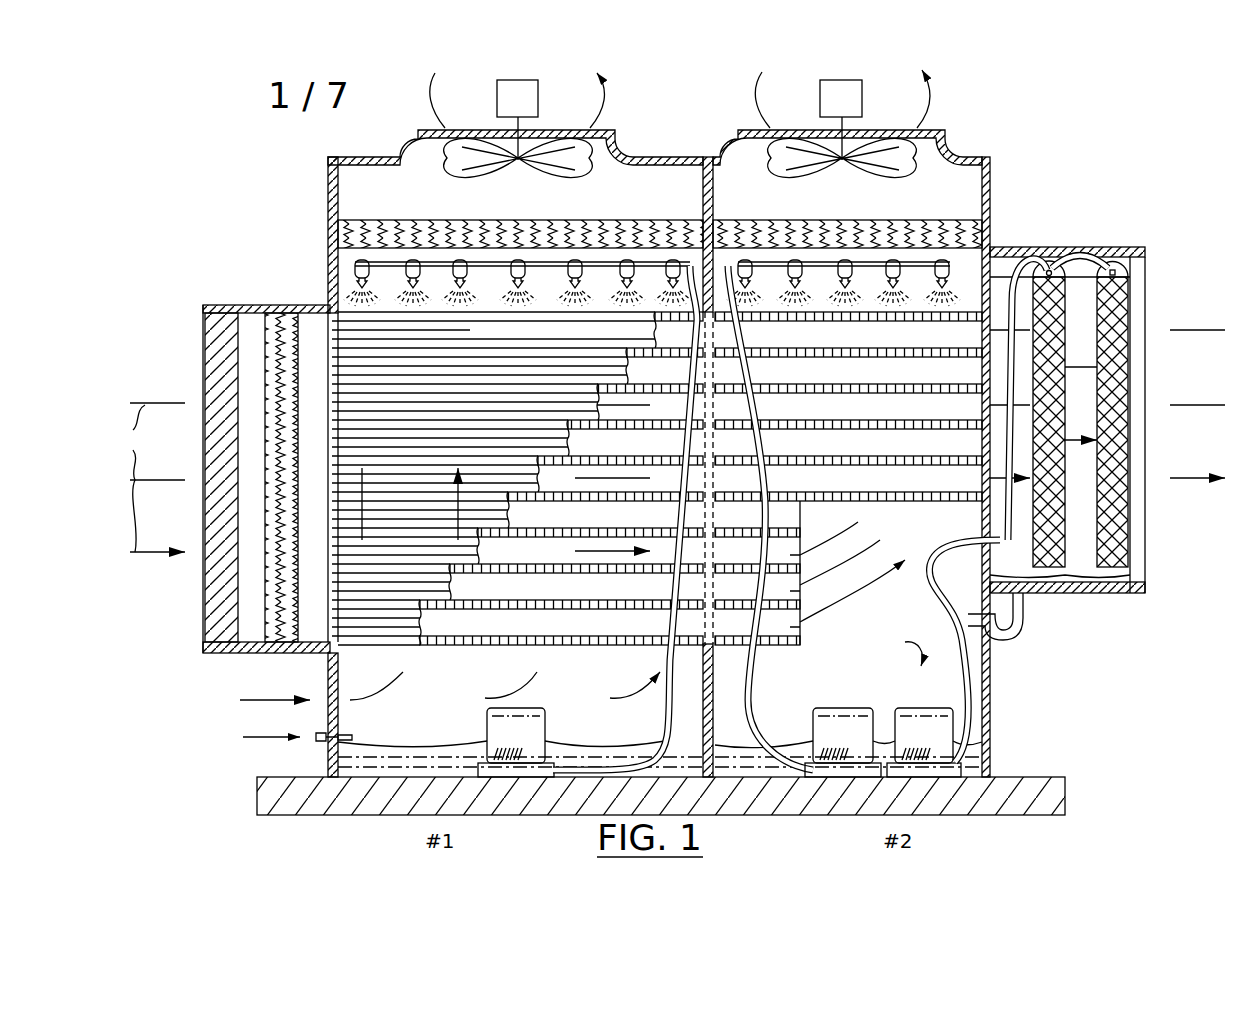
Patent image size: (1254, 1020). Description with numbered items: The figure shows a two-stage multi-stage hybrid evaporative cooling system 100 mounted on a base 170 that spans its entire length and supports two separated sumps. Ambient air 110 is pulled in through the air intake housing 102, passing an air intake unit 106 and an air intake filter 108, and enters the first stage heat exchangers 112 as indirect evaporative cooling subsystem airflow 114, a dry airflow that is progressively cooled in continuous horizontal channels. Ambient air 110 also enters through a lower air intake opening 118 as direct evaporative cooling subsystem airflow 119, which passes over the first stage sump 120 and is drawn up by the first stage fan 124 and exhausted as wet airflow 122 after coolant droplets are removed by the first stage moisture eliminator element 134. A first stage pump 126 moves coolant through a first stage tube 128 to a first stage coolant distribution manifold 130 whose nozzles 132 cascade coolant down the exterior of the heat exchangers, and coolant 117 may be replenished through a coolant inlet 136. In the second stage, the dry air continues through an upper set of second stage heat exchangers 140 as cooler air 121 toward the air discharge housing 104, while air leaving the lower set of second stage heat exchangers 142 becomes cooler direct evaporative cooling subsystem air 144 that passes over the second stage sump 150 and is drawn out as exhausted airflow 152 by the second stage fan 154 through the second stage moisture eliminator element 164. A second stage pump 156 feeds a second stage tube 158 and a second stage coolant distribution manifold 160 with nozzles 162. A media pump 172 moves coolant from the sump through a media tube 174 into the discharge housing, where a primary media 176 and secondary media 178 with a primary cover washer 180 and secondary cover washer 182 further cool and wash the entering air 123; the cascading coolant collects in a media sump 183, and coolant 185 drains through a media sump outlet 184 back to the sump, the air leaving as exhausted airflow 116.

The multi-stage hybrid evaporative cooling system 100 is at (1133, 752).
The air intake housing 102 is at (245, 467).
The air discharge housing 104 is at (1090, 427).
The air intake unit 106 is at (258, 598).
The air intake filter 108 is at (295, 640).
The ambient air 110 is at (305, 700).
The first stage heat exchangers 112 is at (432, 398).
The indirect evaporative cooling subsystem airflow 114 is at (605, 551).
The exhausted airflow 116 is at (1202, 478).
The coolant 117 is at (265, 737).
The lower air intake opening 118 is at (338, 702).
The direct evaporative cooling subsystem airflow 119 is at (661, 690).
The first stage sump 120 is at (486, 747).
The cooler air 121 is at (988, 478).
The exhausted wet airflow 122 is at (510, 87).
The air entering discharge housing 123 is at (1085, 440).
The first stage direct evaporative cooling subsystem fan 124 is at (518, 95).
The first stage pump 126 is at (545, 729).
The first stage tube 128 is at (680, 655).
The first stage coolant distribution manifold 130 is at (392, 262).
The nozzles 132 is at (358, 270).
The first stage moisture eliminator element 134 is at (440, 236).
The coolant inlet 136 is at (352, 735).
The upper set of second stage heat exchangers 140 is at (794, 398).
The lower set of second stage heat exchangers 142 is at (777, 632).
The second stage direct evaporative cooling subsystem air 144 is at (860, 570).
The second stage sump 150 is at (750, 765).
The second stage exhausted wet airflow 152 is at (849, 87).
The second stage direct evaporative cooling subsystem fan 154 is at (842, 95).
The second stage pump 156 is at (843, 728).
The second stage tube 158 is at (755, 700).
The second stage coolant distribution manifold 160 is at (923, 262).
The nozzles 162 is at (943, 272).
The second stage moisture eliminator element 164 is at (806, 237).
The base 170 is at (1065, 800).
The media pump 172 is at (920, 726).
The media tube 174 is at (926, 578).
The primary media 176 is at (1055, 548).
The secondary media 178 is at (1122, 530).
The primary cover washer 180 is at (1046, 268).
The secondary cover washer 182 is at (1118, 272).
The media sump 183 is at (1056, 578).
The media sump outlet 184 is at (1022, 633).
The coolant 185 is at (894, 649).